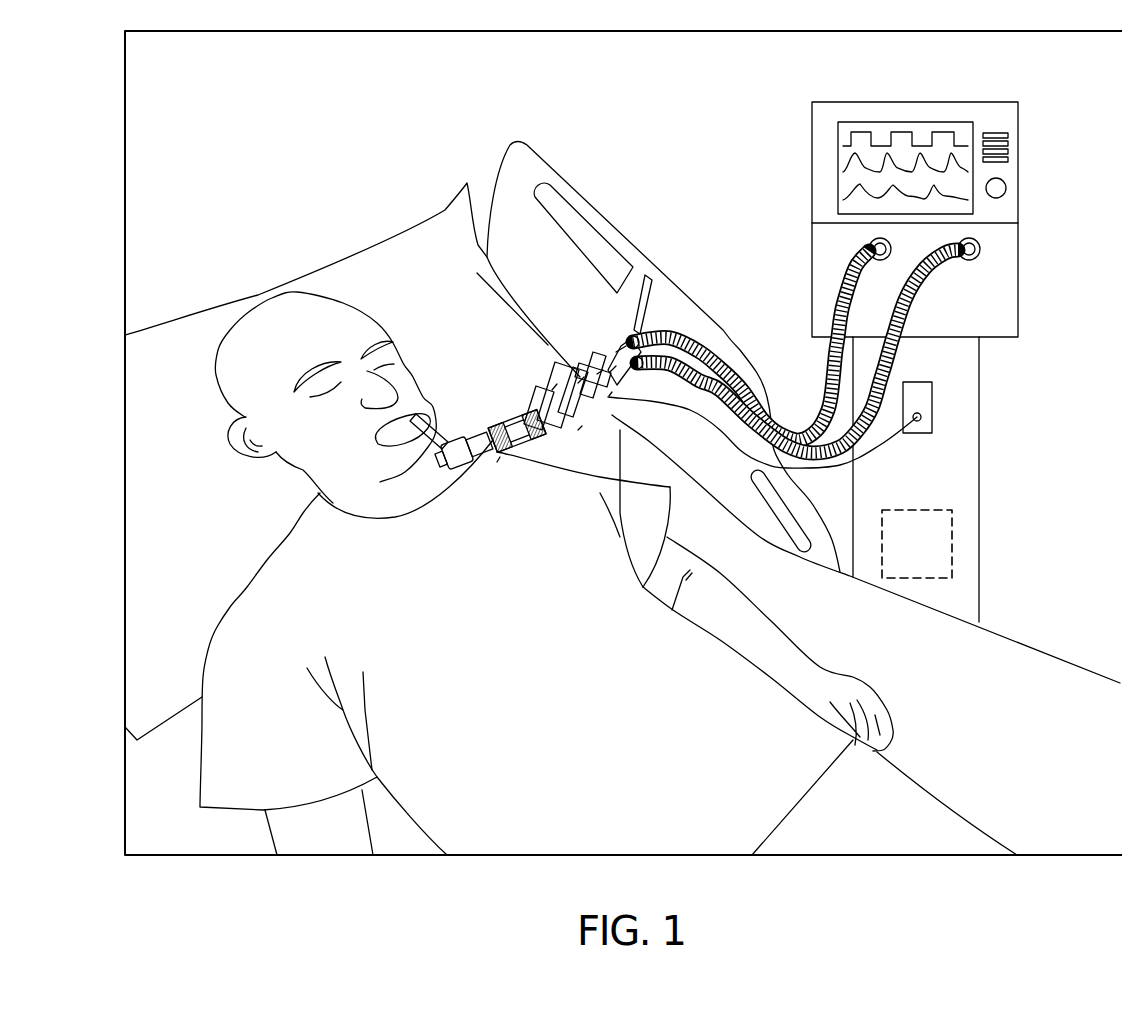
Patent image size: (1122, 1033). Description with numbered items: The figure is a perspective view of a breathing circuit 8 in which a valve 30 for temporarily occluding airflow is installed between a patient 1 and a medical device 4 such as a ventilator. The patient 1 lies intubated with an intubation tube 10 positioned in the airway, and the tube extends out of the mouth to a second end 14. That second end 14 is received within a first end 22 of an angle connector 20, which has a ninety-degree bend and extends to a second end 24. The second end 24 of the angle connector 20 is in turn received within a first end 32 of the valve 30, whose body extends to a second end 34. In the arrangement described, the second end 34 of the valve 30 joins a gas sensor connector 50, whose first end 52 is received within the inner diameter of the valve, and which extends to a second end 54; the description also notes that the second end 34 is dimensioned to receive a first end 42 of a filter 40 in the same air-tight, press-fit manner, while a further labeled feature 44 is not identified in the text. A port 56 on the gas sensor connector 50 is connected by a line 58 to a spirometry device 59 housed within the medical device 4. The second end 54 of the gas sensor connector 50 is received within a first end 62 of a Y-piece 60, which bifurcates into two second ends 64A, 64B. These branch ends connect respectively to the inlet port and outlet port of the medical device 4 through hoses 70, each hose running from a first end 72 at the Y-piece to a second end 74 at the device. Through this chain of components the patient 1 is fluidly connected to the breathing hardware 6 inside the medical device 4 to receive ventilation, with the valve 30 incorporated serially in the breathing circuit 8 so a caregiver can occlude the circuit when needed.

The patient 1 is at (235, 337).
The medical device 4 is at (1044, 157).
The breathing hardware 6 is at (945, 555).
The breathing circuit 8 is at (598, 162).
The intubation tube 10 is at (438, 400).
The second end 14 is at (423, 456).
The angle connector 20 is at (453, 454).
The first end 22 is at (479, 444).
The second end 24 is at (517, 431).
The valve 30 is at (539, 408).
The first end 32 is at (497, 462).
The second end 34 is at (558, 395).
The filter 40 is at (583, 438).
The first end 42 is at (573, 392).
The plate 44 is at (553, 388).
The gas sensor connector 50 is at (593, 375).
The first end 52 is at (580, 383).
The second end 54 is at (598, 372).
The port 56 is at (616, 402).
The line 58 is at (733, 443).
The spirometry device 59 is at (933, 437).
The Y-piece 60 is at (617, 324).
The first end 62 is at (613, 370).
The second end 64A is at (628, 340).
The second end 64B is at (637, 367).
The hoses 70 is at (842, 355).
The first end 72 is at (645, 300).
The second end 74 is at (868, 250).